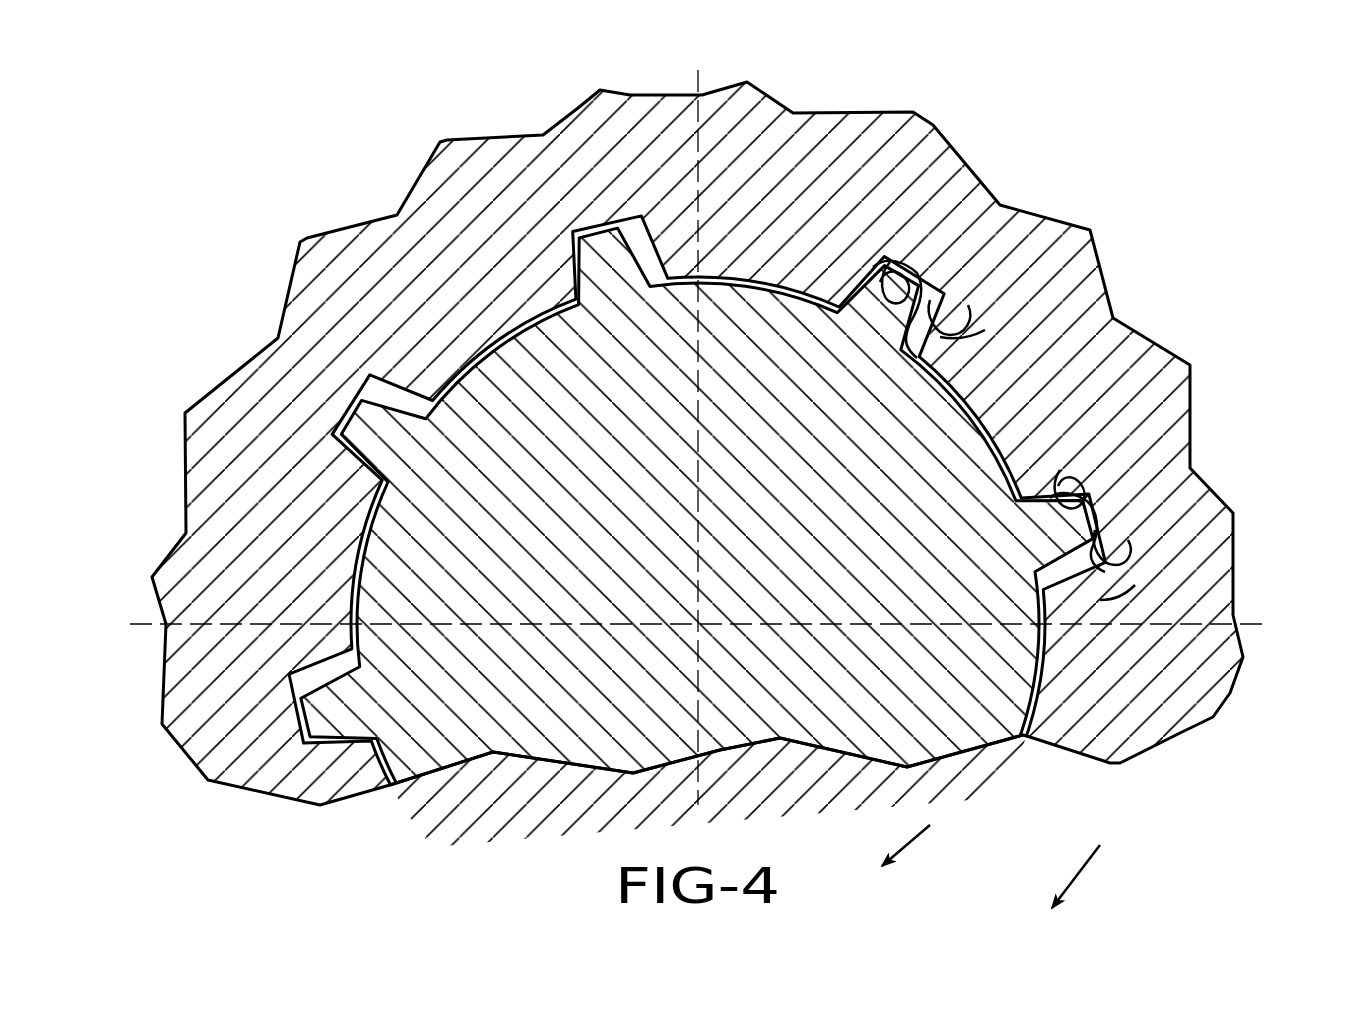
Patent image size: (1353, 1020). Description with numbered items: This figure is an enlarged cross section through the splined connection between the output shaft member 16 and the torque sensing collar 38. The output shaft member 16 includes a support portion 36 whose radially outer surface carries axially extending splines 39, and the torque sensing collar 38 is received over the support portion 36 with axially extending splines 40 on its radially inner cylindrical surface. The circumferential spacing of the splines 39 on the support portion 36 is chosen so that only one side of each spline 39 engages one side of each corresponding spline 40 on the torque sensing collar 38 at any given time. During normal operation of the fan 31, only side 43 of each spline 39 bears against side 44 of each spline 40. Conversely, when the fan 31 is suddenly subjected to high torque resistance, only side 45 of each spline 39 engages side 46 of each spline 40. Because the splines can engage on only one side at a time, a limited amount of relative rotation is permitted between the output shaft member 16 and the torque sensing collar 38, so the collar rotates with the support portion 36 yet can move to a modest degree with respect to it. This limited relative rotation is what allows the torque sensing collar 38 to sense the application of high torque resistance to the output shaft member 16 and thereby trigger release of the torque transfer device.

The output shaft member 16 is at (722, 752).
The fan 31 is at (700, 624).
The support portion 36 is at (953, 688).
The torque sensing collar 38 is at (1140, 337).
The splines 39 is at (1092, 525).
The splines 40 is at (778, 262).
The side 43 is at (855, 288).
The side 44 is at (913, 278).
The side 45 is at (975, 337).
The side 46 is at (950, 290).